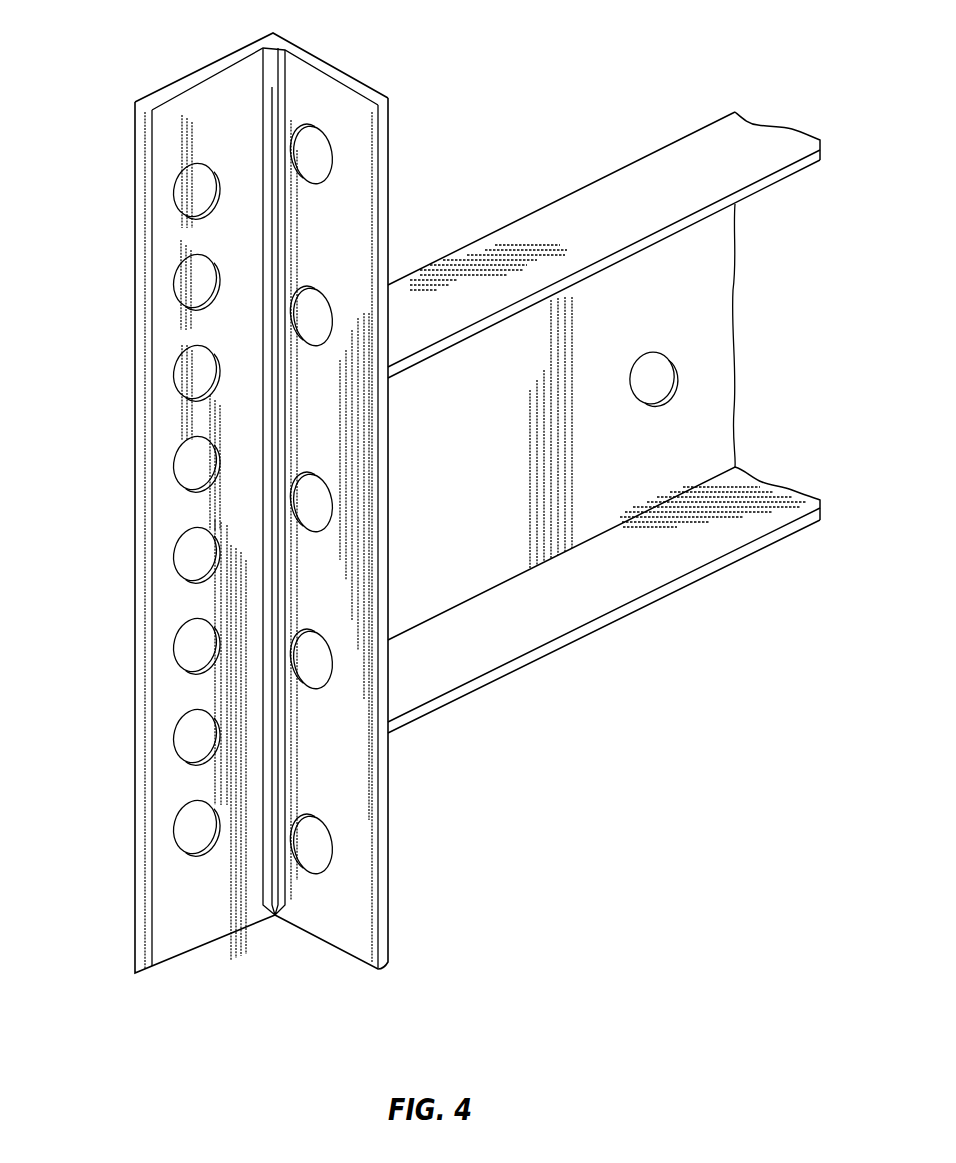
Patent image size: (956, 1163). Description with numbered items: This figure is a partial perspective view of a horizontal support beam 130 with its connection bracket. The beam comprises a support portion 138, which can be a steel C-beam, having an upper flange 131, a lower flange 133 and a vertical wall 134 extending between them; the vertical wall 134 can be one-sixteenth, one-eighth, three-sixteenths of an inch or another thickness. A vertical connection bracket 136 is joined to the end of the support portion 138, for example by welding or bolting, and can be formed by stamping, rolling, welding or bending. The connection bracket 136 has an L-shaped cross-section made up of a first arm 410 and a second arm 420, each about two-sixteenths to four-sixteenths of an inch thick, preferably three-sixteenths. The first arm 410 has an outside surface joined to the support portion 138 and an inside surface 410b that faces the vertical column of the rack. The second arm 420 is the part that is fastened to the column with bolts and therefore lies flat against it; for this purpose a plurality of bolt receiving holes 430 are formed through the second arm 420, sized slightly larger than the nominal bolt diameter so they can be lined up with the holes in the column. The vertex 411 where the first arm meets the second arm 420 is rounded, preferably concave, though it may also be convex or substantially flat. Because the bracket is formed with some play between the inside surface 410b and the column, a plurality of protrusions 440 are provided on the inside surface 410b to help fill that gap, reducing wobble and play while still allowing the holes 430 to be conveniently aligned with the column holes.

The horizontal support beam 130 is at (608, 418).
The upper flange 131 is at (637, 183).
The lower flange 133 is at (653, 557).
The vertical wall 134 is at (707, 283).
The vertical connection bracket 136 is at (275, 33).
The support portion 138 is at (568, 190).
The first arm 410 is at (267, 514).
The inside surface 410b is at (345, 782).
The vertex 411 is at (275, 915).
The second arm 420 is at (202, 928).
The bolt receiving holes 430 is at (180, 360).
The protrusions 440 is at (310, 658).